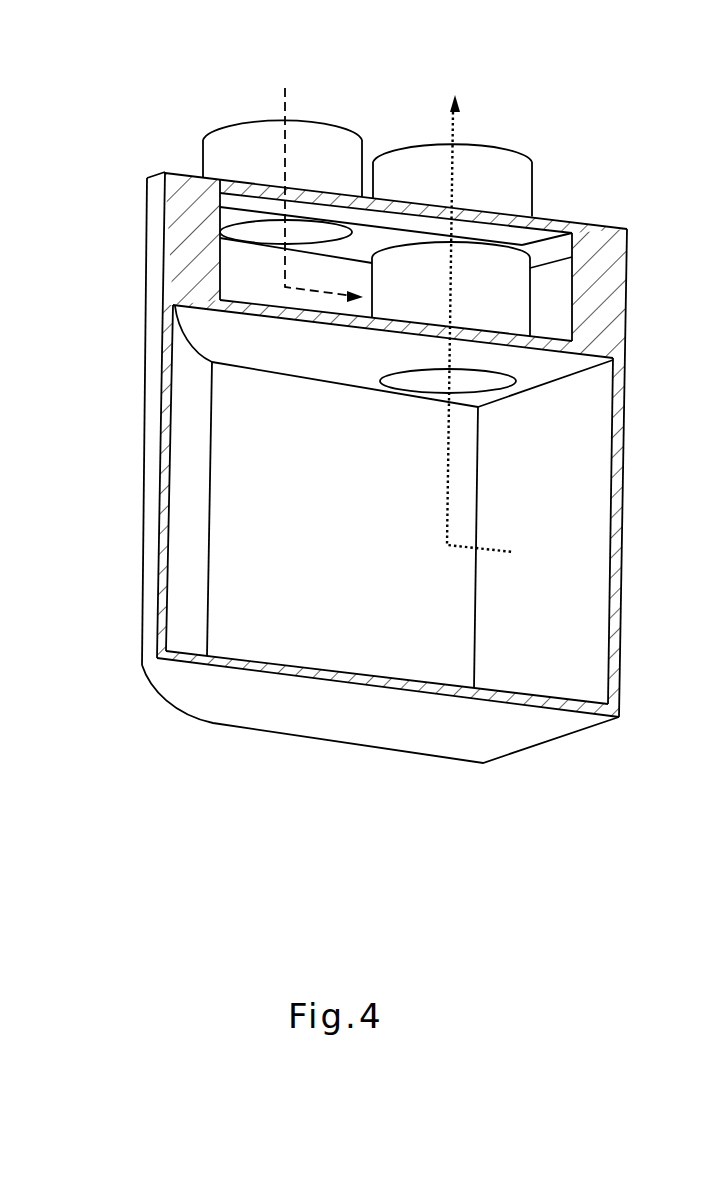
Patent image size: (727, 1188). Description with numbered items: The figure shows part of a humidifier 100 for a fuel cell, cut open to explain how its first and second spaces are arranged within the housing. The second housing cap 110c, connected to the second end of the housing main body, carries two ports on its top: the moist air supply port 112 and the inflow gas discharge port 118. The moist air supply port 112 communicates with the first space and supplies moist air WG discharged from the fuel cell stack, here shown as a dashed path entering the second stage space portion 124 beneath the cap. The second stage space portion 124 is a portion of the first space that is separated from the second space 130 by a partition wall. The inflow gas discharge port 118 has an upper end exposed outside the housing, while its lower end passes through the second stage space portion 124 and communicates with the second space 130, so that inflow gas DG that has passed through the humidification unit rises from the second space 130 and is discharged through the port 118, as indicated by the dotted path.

The humidifier 100 is at (133, 205).
The second housing cap 110c is at (180, 238).
The moist air supply port 112 is at (227, 152).
The inflow gas discharge port 118 is at (523, 185).
The second stage space portion 124 is at (243, 274).
The second space 130 is at (245, 445).
The moist air WG is at (285, 95).
The inflow gas DG is at (452, 112).